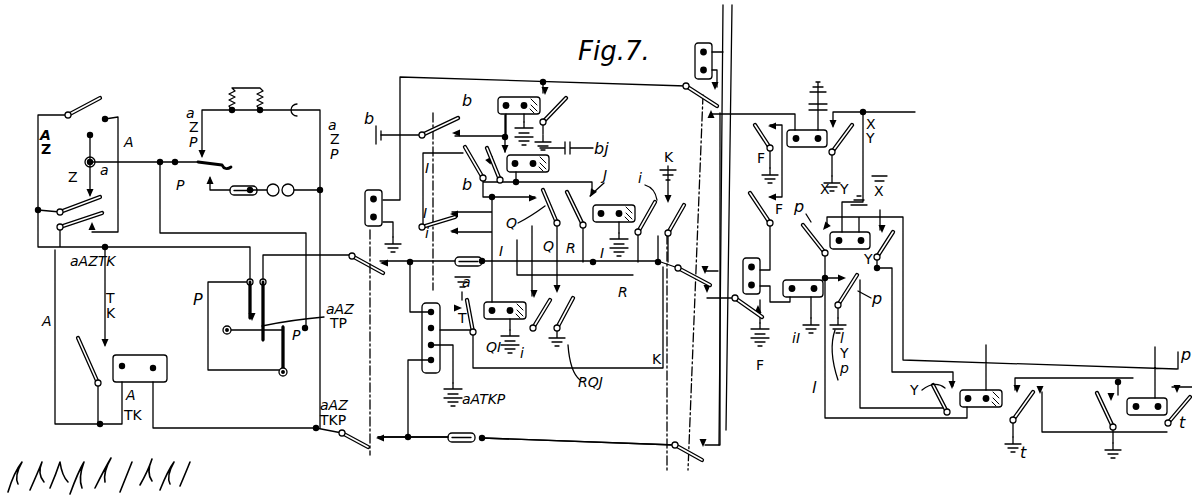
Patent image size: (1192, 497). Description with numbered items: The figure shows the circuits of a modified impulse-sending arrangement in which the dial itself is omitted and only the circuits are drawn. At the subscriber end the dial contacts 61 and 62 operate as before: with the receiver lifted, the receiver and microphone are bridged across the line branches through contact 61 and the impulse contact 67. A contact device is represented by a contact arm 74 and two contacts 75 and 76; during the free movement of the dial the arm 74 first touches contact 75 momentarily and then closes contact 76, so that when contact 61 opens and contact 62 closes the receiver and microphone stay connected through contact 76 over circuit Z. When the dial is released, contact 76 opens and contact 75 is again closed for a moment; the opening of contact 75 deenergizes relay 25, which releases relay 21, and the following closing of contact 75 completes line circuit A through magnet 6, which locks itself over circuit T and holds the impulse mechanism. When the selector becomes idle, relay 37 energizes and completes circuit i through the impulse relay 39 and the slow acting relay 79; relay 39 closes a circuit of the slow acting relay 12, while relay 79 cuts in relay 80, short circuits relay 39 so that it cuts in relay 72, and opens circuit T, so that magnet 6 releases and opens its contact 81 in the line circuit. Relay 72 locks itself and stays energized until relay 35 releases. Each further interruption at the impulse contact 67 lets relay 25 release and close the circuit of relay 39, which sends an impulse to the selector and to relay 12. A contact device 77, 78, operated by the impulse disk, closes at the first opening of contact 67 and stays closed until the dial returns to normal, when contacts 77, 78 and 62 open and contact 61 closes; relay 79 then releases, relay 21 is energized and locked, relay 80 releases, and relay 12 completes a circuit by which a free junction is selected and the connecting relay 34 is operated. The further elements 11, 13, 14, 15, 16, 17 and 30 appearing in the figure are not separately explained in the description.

The magnet 6 is at (136, 357).
The relay 11 is at (1145, 416).
The slow acting relay 12 is at (979, 409).
The contact lever 13 is at (212, 161).
The switch contact 14 is at (346, 256).
The switch contact 15 is at (339, 437).
The switch contact 16 is at (656, 273).
The line conductor 17 is at (585, 441).
The relay 21 is at (548, 170).
The relay 25 is at (422, 340).
The relay 30 is at (516, 99).
The connecting relay 34 is at (695, 66).
The relay 35 is at (805, 148).
The relay 37 is at (744, 262).
The impulse relay 39 is at (798, 280).
The contact 61 is at (76, 207).
The contact 62 is at (104, 221).
The impulse contact 67 is at (255, 322).
The relay 72 is at (855, 233).
The contact arm 74 is at (87, 107).
The contact 75 is at (108, 118).
The contact 76 is at (88, 160).
The contact device 77 is at (282, 356).
The contact device 78 is at (307, 331).
The slow acting relay 79 is at (499, 302).
The slow acting relay 80 is at (624, 200).
The contact 81 is at (92, 343).